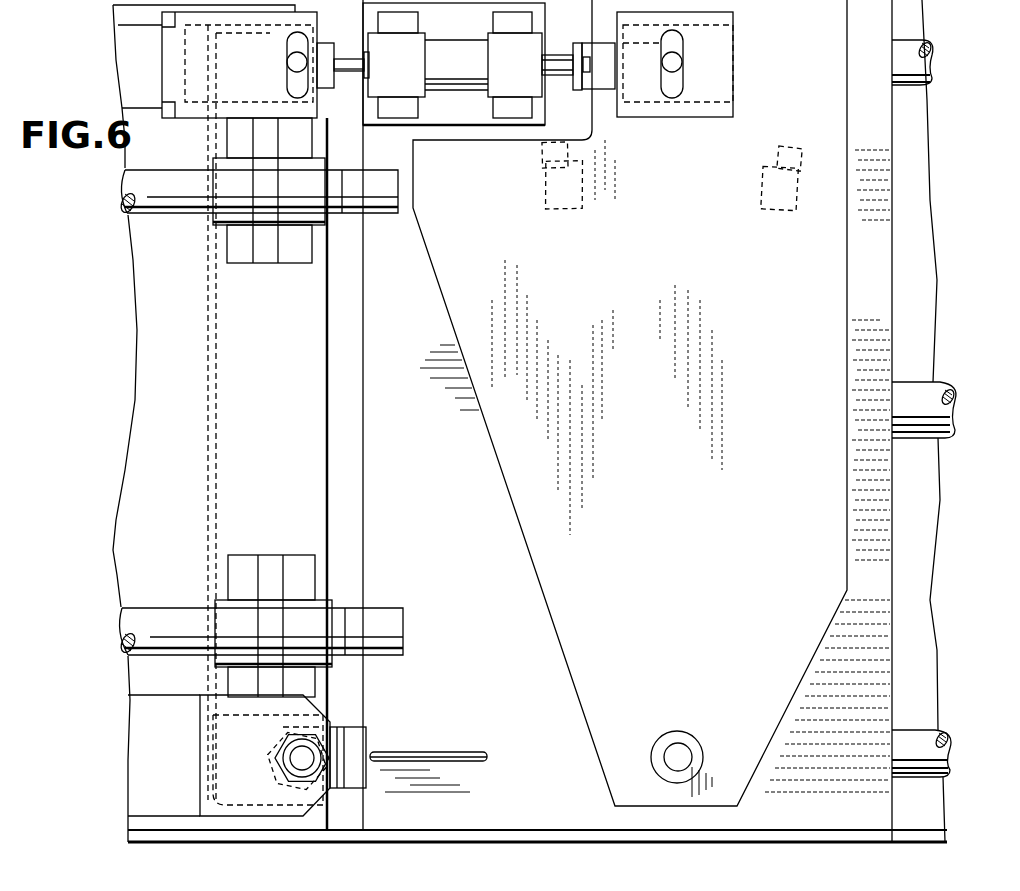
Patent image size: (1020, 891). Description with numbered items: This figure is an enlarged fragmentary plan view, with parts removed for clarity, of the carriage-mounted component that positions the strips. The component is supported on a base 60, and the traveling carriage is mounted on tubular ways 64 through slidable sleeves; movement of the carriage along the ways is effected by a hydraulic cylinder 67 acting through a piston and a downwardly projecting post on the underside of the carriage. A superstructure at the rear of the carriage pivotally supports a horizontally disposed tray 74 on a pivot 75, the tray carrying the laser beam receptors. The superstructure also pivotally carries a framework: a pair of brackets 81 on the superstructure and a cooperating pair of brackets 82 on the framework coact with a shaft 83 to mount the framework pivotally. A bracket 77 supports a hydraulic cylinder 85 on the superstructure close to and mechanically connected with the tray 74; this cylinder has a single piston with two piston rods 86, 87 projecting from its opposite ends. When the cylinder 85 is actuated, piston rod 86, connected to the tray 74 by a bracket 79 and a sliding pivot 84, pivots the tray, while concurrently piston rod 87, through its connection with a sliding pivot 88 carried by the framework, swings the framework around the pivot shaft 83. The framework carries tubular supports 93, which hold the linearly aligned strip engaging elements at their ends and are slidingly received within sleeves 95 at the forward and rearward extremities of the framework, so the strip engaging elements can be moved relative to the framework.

The base 60 is at (903, 278).
The tubular ways 64 is at (905, 62).
The hydraulic cylinder 67 is at (905, 405).
The tray 74 is at (653, 351).
The pivot 75 is at (680, 760).
The bracket 77 is at (469, 119).
The bracket 79 is at (592, 88).
The brackets 81 is at (350, 773).
The brackets 82 is at (227, 758).
The shaft 83 is at (300, 757).
The sliding pivot 84 is at (683, 48).
The hydraulic cylinder 85 is at (463, 50).
The piston rod 86 is at (558, 60).
The piston rod 87 is at (348, 62).
The sliding pivot 88 is at (288, 40).
The tubular supports 93 is at (185, 217).
The sleeves 95 is at (325, 235).